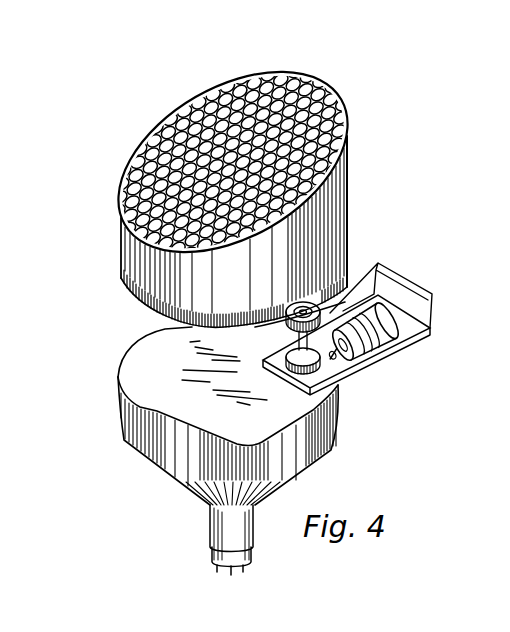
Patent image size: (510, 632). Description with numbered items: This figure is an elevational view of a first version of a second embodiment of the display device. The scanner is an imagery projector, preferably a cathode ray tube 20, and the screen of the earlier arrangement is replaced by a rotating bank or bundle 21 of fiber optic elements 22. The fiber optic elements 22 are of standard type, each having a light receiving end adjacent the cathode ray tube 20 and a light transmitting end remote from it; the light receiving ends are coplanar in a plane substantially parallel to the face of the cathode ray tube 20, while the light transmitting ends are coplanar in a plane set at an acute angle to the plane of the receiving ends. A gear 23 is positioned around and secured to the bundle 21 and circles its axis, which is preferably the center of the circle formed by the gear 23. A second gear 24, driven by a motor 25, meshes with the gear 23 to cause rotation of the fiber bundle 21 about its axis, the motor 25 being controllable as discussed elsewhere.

The cathode ray tube 20 is at (144, 348).
The bundle of fiber optic elements 21 is at (348, 172).
The fiber optic elements 22 is at (249, 79).
The gear 23 is at (120, 267).
The second gear 24 is at (327, 312).
The motor 25 is at (390, 330).